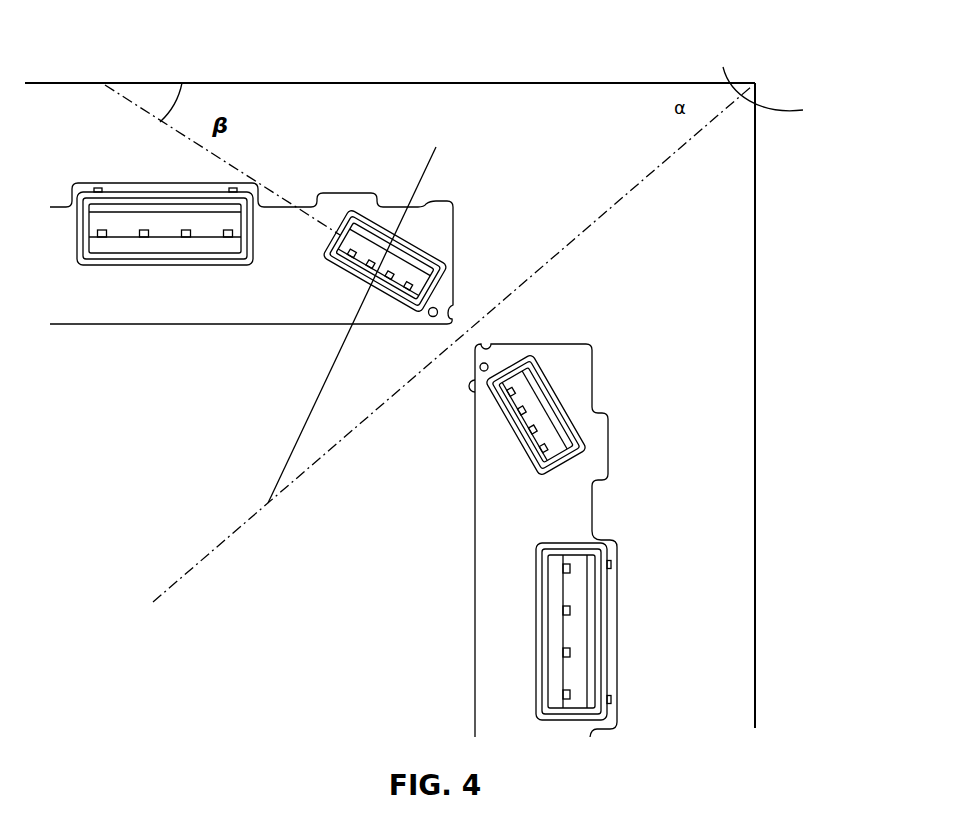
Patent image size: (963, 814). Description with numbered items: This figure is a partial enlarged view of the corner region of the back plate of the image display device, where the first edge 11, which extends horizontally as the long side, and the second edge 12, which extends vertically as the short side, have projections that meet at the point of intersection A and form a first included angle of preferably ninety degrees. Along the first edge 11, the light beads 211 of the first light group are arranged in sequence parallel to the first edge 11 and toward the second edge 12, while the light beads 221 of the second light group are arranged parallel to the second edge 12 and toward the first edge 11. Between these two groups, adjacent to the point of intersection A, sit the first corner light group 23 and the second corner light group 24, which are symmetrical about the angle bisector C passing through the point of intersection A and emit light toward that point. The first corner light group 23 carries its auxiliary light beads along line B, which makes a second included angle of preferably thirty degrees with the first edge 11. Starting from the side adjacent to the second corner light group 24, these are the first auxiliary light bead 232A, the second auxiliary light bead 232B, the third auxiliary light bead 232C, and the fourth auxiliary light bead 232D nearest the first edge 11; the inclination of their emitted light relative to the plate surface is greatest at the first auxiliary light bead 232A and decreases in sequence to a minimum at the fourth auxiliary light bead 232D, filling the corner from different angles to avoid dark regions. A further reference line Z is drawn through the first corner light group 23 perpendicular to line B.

The first edge 11 is at (468, 80).
The second edge 12 is at (757, 305).
The first corner light group 23 is at (362, 348).
The second corner light group 24 is at (560, 393).
The light beads 211 is at (140, 235).
The light beads 221 is at (556, 612).
The first auxiliary light bead 232A is at (406, 306).
The second auxiliary light bead 232B is at (390, 285).
The third auxiliary light bead 232C is at (362, 267).
The fourth auxiliary light bead 232D is at (345, 258).
The point of intersection A is at (762, 78).
The line B is at (140, 113).
The angle bisector C is at (618, 222).
The axis Z is at (365, 116).